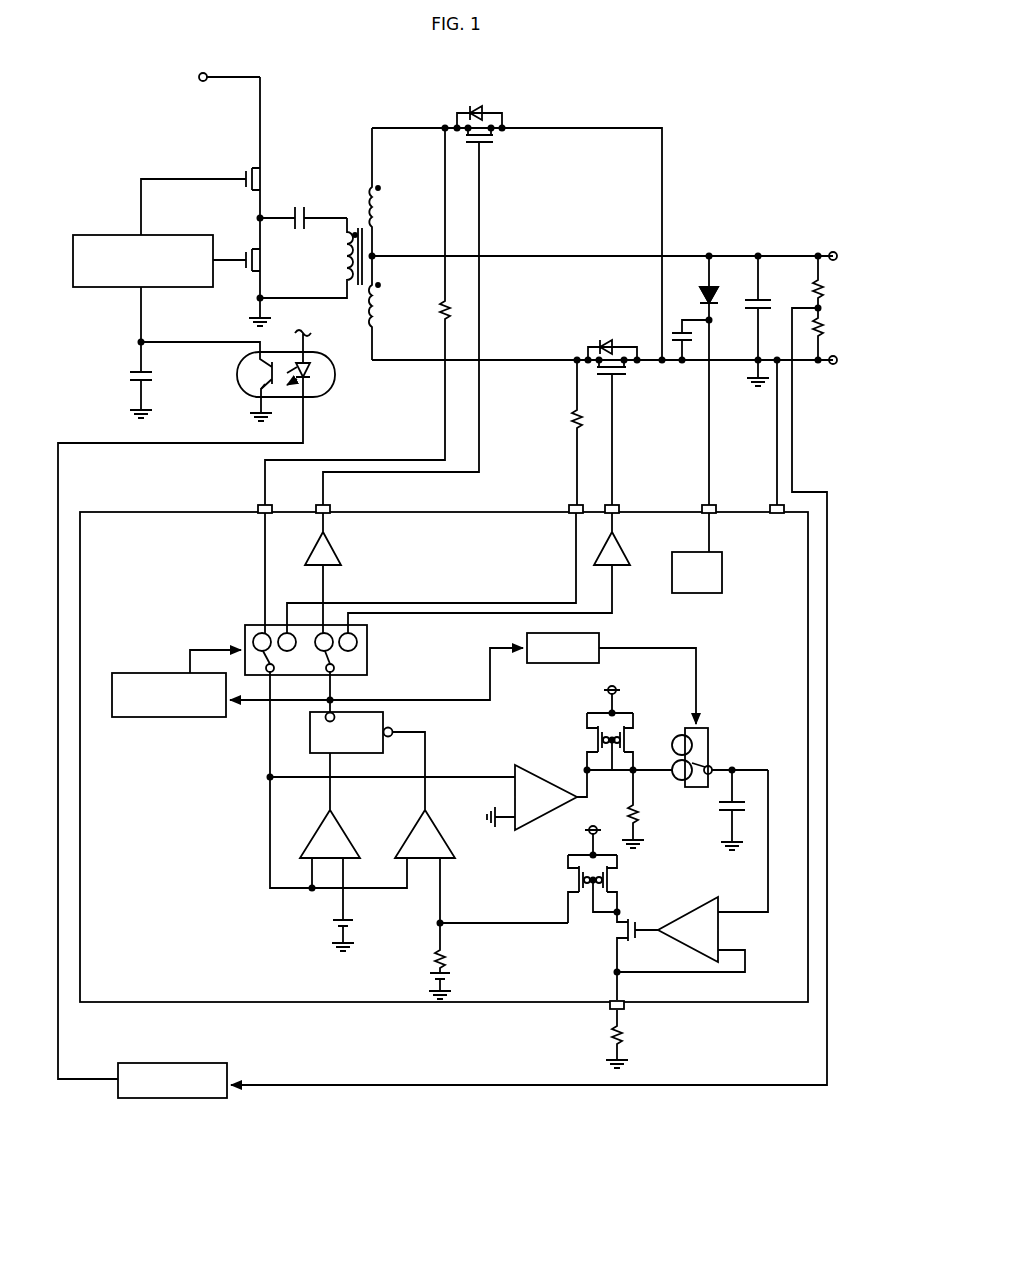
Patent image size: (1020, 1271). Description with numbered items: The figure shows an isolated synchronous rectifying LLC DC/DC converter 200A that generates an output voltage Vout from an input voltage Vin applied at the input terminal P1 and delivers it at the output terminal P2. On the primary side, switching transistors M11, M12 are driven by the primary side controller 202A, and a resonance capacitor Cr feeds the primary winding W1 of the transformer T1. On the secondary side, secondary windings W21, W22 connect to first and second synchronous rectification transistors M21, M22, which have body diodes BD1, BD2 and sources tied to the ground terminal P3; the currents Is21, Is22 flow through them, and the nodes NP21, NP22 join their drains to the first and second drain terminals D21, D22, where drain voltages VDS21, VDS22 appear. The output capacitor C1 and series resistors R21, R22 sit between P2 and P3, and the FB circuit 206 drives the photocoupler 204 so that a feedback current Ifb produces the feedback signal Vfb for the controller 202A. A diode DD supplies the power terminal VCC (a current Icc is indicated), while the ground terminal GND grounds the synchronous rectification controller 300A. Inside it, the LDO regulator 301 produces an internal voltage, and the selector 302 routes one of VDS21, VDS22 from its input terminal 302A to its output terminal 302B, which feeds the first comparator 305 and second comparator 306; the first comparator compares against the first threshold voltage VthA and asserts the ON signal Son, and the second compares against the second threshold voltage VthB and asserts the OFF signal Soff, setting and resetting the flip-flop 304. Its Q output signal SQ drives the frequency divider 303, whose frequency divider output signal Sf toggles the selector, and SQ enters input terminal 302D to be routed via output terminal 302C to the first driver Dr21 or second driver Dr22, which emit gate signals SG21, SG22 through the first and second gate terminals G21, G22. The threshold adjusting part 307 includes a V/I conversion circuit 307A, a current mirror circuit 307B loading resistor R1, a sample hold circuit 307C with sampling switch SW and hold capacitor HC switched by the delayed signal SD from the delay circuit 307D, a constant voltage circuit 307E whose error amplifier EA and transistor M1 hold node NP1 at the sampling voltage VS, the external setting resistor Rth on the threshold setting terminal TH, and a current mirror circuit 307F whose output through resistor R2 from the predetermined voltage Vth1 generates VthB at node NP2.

The input terminal P1 is at (229, 63).
The input voltage Vin is at (178, 73).
The switching transistor M11 is at (224, 194).
The switching transistor M12 is at (260, 252).
The primary side controller 202A is at (137, 236).
The resonance capacitor Cr is at (303, 210).
The transformer T1 is at (340, 244).
The primary winding W1 is at (308, 258).
The secondary winding W21 is at (394, 192).
The secondary winding W22 is at (395, 308).
The current Is21 is at (398, 144).
The current Is22 is at (398, 342).
The feedback signal Vfb is at (154, 352).
The feedback current Ifb is at (200, 333).
The photocoupler 204 is at (196, 704).
The DC/DC converter 200A is at (672, 99).
The connection node NP21 is at (413, 109).
The connection node NP22 is at (546, 346).
The body diode BD1 is at (474, 107).
The body diode BD2 is at (605, 344).
The first synchronous rectification transistor M21 is at (486, 146).
The second synchronous rectification transistor M22 is at (614, 380).
The drain voltage VDS21 is at (357, 316).
The drain voltage VDS22 is at (532, 432).
The gate signal SG21 is at (368, 323).
The gate signal SG22 is at (622, 439).
The output voltage Vout is at (720, 245).
The output terminal P2 is at (842, 242).
The ground terminal P3 is at (842, 347).
The diode DD is at (688, 287).
The supply current Icc is at (692, 340).
The power terminal VCC is at (679, 414).
The output capacitor C1 is at (745, 320).
The resistor R21 is at (834, 284).
The resistor R22 is at (834, 339).
The ground terminal GND is at (747, 431).
The synchronous rectification controller 300A is at (440, 738).
The first drain terminal D21 is at (240, 557).
The first gate terminal G21 is at (297, 500).
The second drain terminal D22 is at (435, 551).
The second gate terminal G22 is at (593, 492).
The first driver Dr21 is at (344, 573).
The second driver Dr22 is at (510, 573).
The LDO regulator 301 is at (694, 568).
The selector 302 is at (288, 636).
The input terminal 302A is at (226, 631).
The output terminal 302B is at (228, 661).
The output terminal 302C is at (367, 633).
The input terminal 302D is at (370, 669).
The frequency divider output signal Sf is at (215, 651).
The Q output signal SQ is at (376, 676).
The frequency divider 303 is at (169, 709).
The flip-flop 304 is at (367, 738).
The first comparator 305 is at (338, 864).
The second comparator 306 is at (436, 862).
The ON signal Son is at (296, 797).
The OFF signal Soff is at (394, 797).
The first threshold voltage VthA is at (308, 913).
The second threshold voltage VthB is at (461, 903).
The connection node NP2 is at (473, 917).
The resistor R2 is at (426, 966).
The predetermined voltage Vth1 is at (457, 980).
The threshold adjusting part 307 is at (634, 796).
The V/I conversion circuit 307A is at (537, 783).
The current mirror circuit 307B is at (587, 730).
The sample hold circuit 307C is at (721, 751).
The delay circuit 307D is at (591, 639).
The constant voltage circuit 307E is at (681, 924).
The current mirror circuit 307F is at (554, 874).
The delayed signal SD is at (660, 686).
The sampling switch SW is at (666, 707).
The sampling voltage VS is at (743, 831).
The hold capacitor HC is at (704, 810).
The resistor R1 is at (622, 809).
The transistor M1 is at (614, 942).
The error amplifier EA is at (659, 955).
The connection node NP1 is at (586, 967).
The threshold setting terminal TH is at (636, 1002).
The setting resistor Rth is at (601, 1045).
The FB circuit 206 is at (193, 1069).